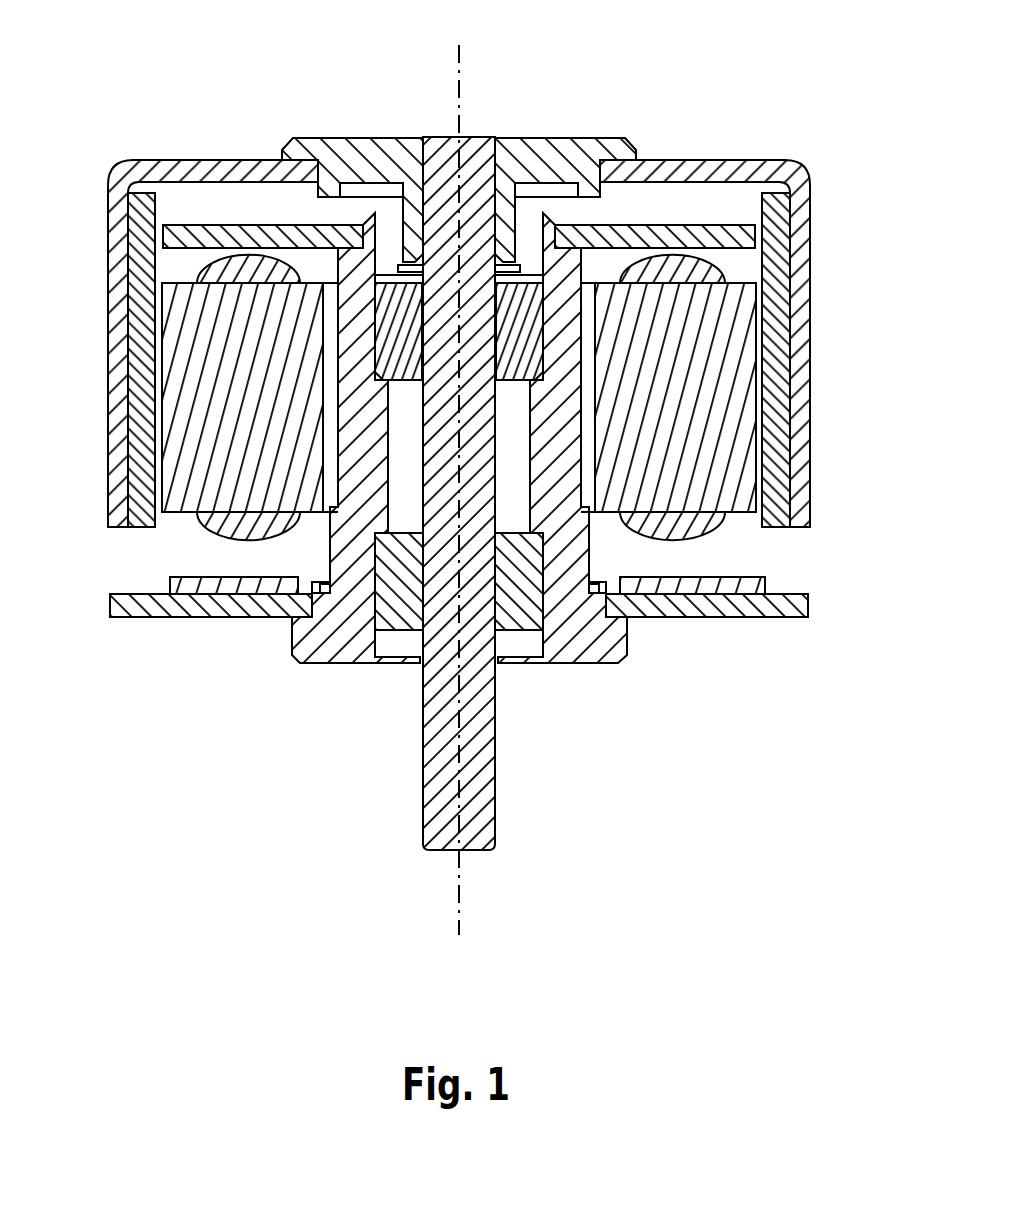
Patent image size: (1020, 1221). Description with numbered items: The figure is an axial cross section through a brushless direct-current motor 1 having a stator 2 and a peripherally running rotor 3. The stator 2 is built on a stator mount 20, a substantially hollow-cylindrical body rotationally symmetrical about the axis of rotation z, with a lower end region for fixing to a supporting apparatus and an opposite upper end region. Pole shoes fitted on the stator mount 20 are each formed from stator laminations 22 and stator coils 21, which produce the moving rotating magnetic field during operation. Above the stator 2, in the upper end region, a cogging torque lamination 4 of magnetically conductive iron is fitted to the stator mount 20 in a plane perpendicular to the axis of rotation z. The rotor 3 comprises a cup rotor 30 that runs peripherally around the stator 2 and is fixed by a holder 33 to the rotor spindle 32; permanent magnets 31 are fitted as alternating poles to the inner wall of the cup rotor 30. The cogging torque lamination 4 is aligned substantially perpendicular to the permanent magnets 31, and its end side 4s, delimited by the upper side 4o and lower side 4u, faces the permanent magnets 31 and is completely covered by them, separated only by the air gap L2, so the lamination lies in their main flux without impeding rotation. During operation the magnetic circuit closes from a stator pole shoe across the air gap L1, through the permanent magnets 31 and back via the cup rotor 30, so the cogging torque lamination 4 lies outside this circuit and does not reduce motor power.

The brushless direct-current motor 1 is at (206, 690).
The stator 2 is at (737, 544).
The peripherally running rotor 3 is at (358, 108).
The cogging torque lamination 4 is at (227, 230).
The upper side of the cogging torque lamination 4o is at (253, 218).
The lower side of the cogging torque lamination 4u is at (206, 275).
The end side of the cogging torque lamination 4s is at (160, 237).
The stator mount 20 is at (337, 648).
The stator coils 21 is at (212, 522).
The stator laminations 22 is at (180, 398).
The cup rotor 30 is at (125, 175).
The permanent magnets 31 is at (780, 428).
The rotor spindle 32 is at (483, 738).
The holder 33 is at (560, 147).
The air gap L1 is at (402, 397).
The air gap L2 is at (506, 355).
The axis of rotation z is at (457, 888).